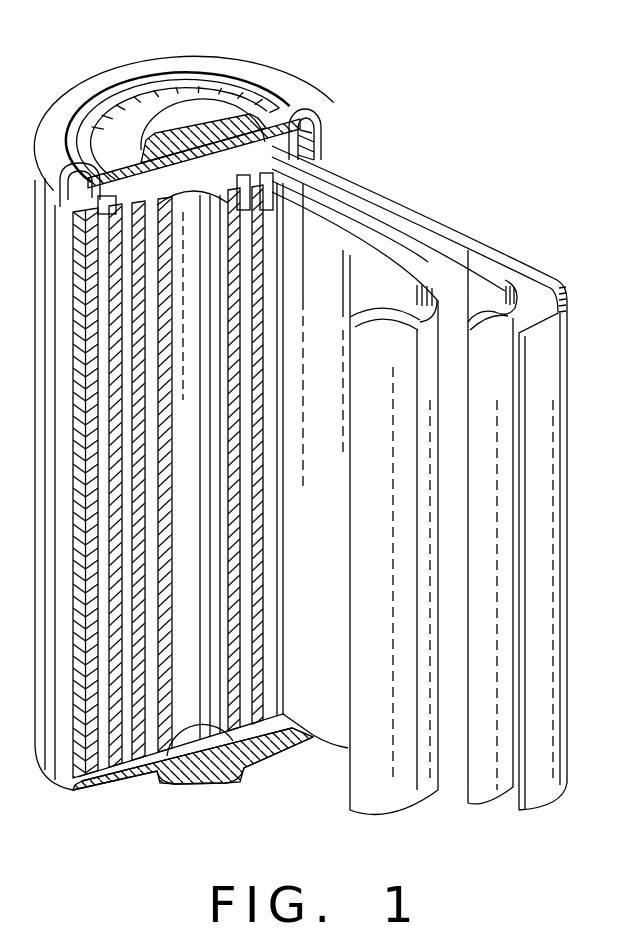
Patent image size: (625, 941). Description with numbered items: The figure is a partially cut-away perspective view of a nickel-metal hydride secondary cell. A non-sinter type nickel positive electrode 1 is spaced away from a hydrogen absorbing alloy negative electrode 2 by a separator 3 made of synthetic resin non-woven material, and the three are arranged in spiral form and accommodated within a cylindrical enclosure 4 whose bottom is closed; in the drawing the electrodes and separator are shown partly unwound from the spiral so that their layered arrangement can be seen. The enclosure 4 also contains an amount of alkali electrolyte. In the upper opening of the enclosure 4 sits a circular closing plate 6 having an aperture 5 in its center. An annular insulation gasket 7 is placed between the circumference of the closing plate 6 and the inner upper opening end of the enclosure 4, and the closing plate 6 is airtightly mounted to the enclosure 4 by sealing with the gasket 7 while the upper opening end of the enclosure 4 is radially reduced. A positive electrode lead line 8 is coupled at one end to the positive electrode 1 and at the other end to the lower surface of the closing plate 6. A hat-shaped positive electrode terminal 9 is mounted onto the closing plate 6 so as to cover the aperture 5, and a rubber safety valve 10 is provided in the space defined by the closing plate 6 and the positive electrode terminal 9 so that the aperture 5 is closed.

The non-sinter type nickel positive electrode 1 is at (430, 243).
The hydrogen absorbing alloy negative electrode 2 is at (552, 281).
The separator 3 is at (492, 274).
The cylindrical enclosure 4 is at (330, 140).
The aperture 5 is at (266, 98).
The closing plate 6 is at (309, 98).
The annular insulation gasket 7 is at (321, 118).
The positive electrode lead line 8 is at (203, 150).
The positive electrode terminal 9 is at (170, 113).
The rubber safety valve 10 is at (226, 138).